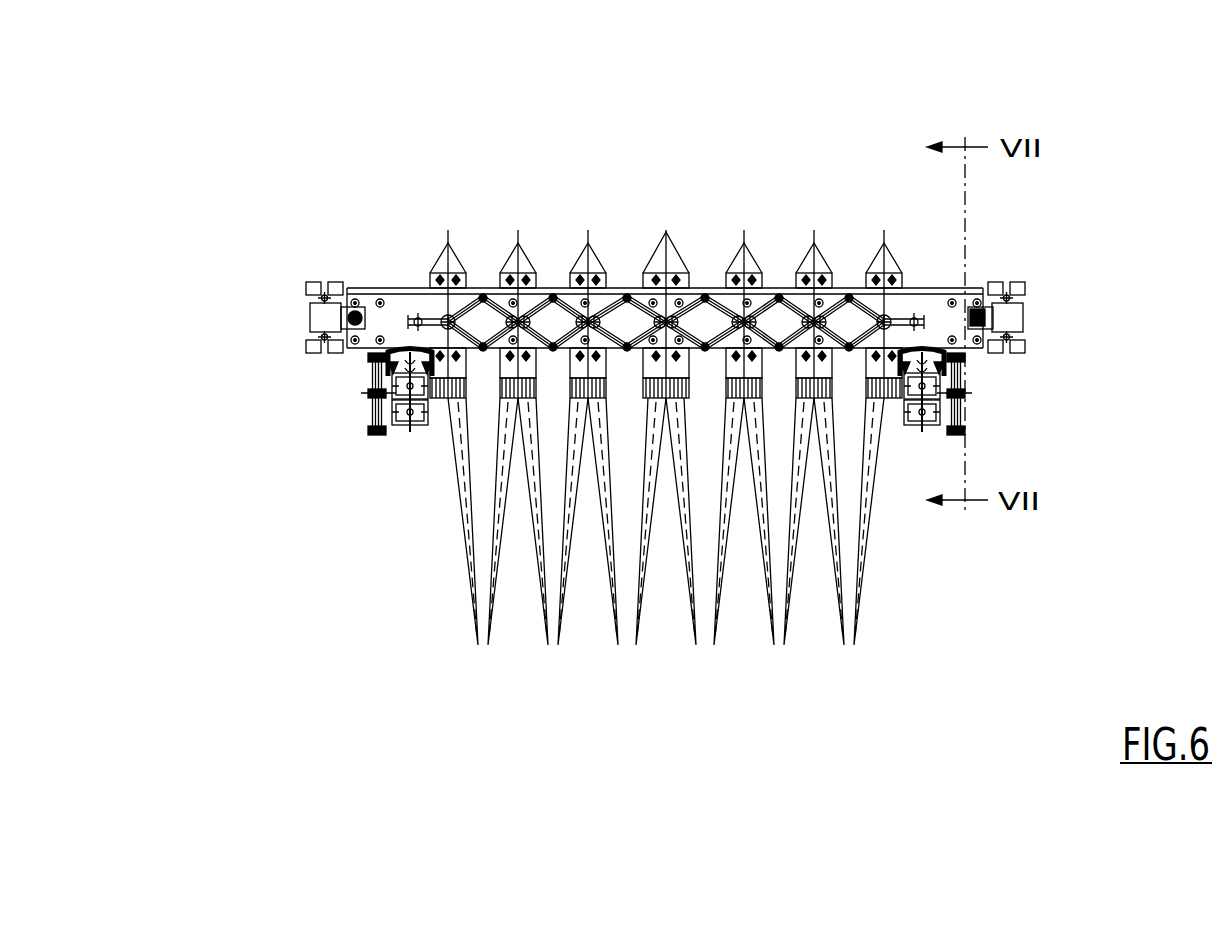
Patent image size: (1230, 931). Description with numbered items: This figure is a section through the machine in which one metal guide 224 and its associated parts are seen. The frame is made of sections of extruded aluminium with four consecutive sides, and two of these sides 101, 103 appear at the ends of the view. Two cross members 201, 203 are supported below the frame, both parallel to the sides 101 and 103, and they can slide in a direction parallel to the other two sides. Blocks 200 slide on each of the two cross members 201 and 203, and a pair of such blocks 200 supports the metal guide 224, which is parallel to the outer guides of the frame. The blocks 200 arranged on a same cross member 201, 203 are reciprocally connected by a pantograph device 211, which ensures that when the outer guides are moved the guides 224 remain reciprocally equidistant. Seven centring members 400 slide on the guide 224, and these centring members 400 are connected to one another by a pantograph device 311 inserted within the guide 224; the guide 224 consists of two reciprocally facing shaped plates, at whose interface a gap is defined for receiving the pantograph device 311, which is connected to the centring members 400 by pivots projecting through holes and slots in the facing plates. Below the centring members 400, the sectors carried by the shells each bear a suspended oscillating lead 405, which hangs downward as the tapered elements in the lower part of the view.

The side 101 is at (313, 305).
The side 103 is at (1025, 285).
The block 200 is at (392, 350).
The cross member 201 is at (405, 430).
The cross member 203 is at (922, 432).
The pantograph device 211 is at (362, 411).
The metal guide 224 is at (395, 290).
The pantograph device 311 is at (632, 298).
The centring member 400 is at (443, 250).
The suspended oscillating lead 405 is at (465, 522).